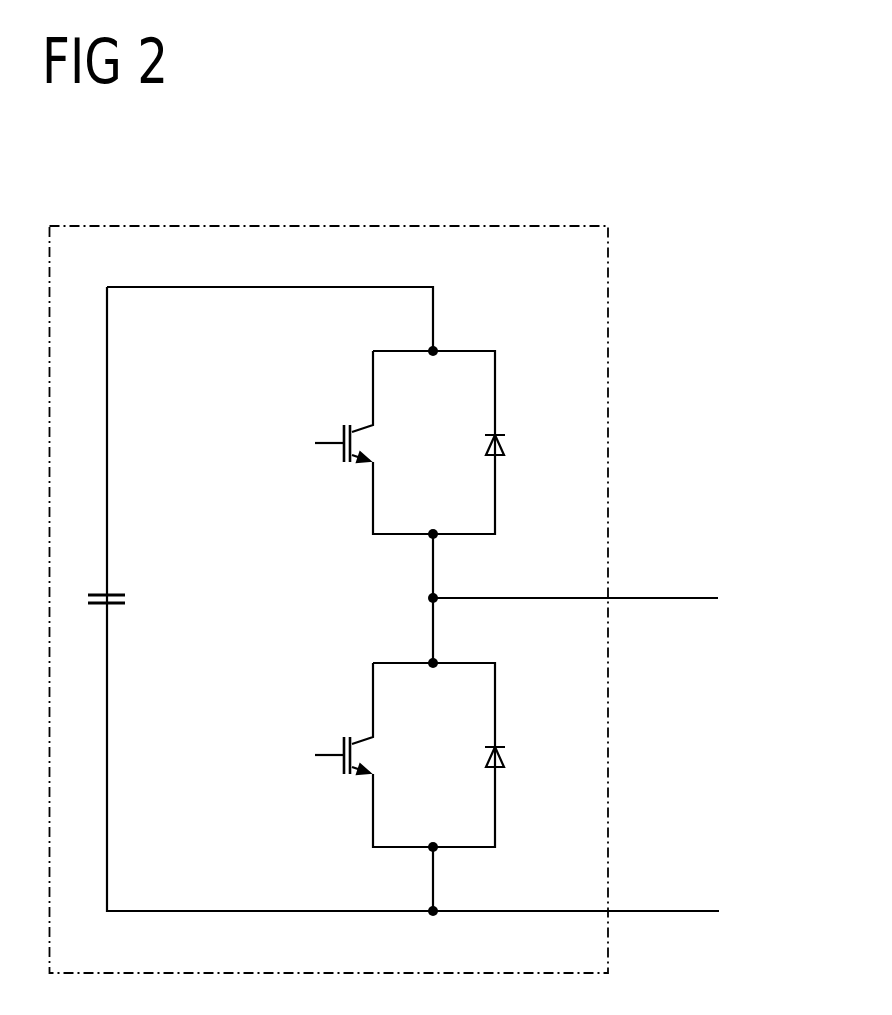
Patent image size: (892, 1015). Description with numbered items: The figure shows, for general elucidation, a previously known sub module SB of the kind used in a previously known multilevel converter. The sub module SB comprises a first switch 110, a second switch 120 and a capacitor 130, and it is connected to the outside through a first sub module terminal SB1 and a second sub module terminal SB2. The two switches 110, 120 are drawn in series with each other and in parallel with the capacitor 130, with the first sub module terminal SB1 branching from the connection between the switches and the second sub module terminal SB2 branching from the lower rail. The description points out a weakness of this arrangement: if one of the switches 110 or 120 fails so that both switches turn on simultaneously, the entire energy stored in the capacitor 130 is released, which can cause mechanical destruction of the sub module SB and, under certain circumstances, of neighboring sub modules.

The first switch 110 is at (342, 455).
The second switch 120 is at (343, 767).
The capacitor 130 is at (113, 592).
The sub module SB is at (667, 384).
The first sub module terminal SB1 is at (608, 598).
The second sub module terminal SB2 is at (608, 911).